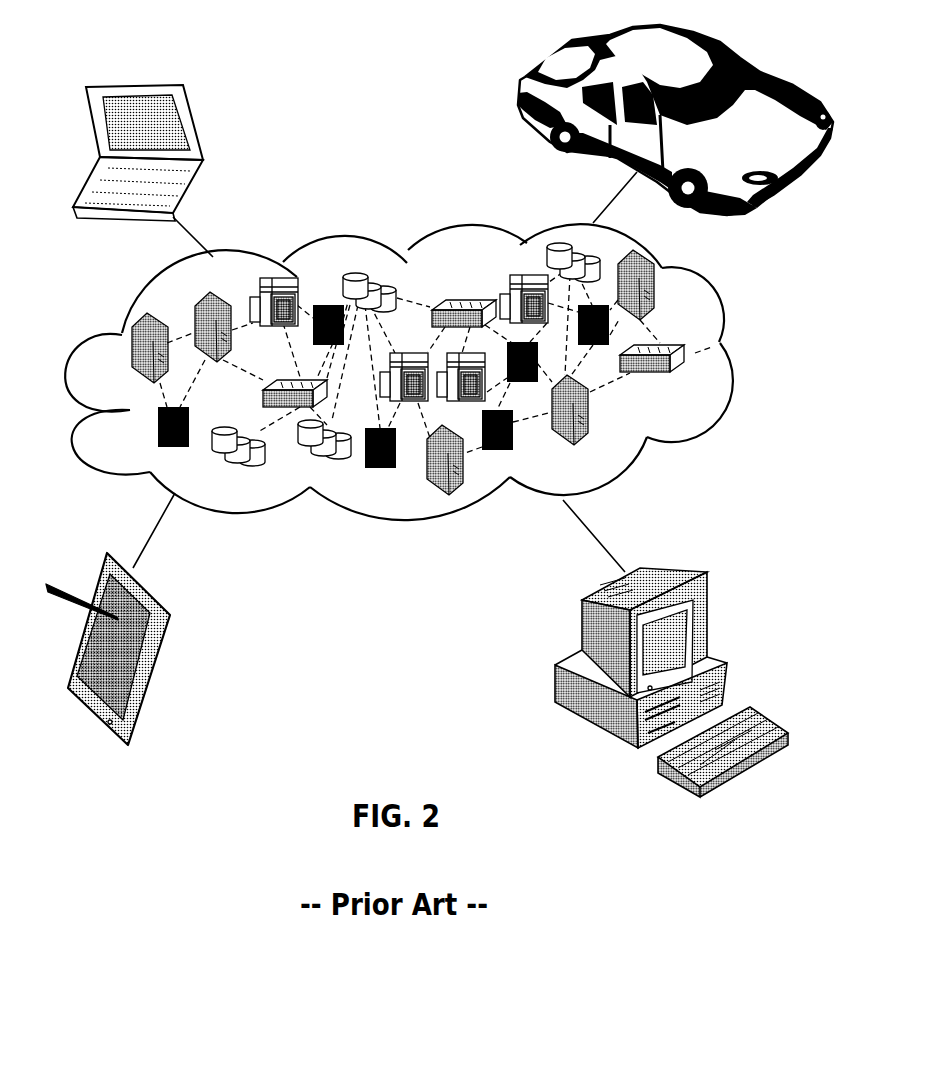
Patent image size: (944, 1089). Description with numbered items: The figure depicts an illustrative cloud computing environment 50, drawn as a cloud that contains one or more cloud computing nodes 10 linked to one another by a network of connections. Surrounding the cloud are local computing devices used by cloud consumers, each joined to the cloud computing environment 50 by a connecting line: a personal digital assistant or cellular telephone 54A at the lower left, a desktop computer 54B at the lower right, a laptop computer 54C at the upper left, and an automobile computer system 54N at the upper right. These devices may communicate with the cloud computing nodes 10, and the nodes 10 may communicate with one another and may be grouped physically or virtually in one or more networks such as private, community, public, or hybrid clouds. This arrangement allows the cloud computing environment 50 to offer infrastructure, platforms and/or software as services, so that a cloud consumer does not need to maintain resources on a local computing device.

The cloud computing nodes 10 is at (693, 380).
The cloud computing environment 50 is at (737, 352).
The personal digital assistant (PDA) or cellular telephone 54A is at (168, 640).
The desktop computer 54B is at (677, 565).
The laptop computer 54C is at (197, 127).
The automobile computer system 54N is at (520, 100).